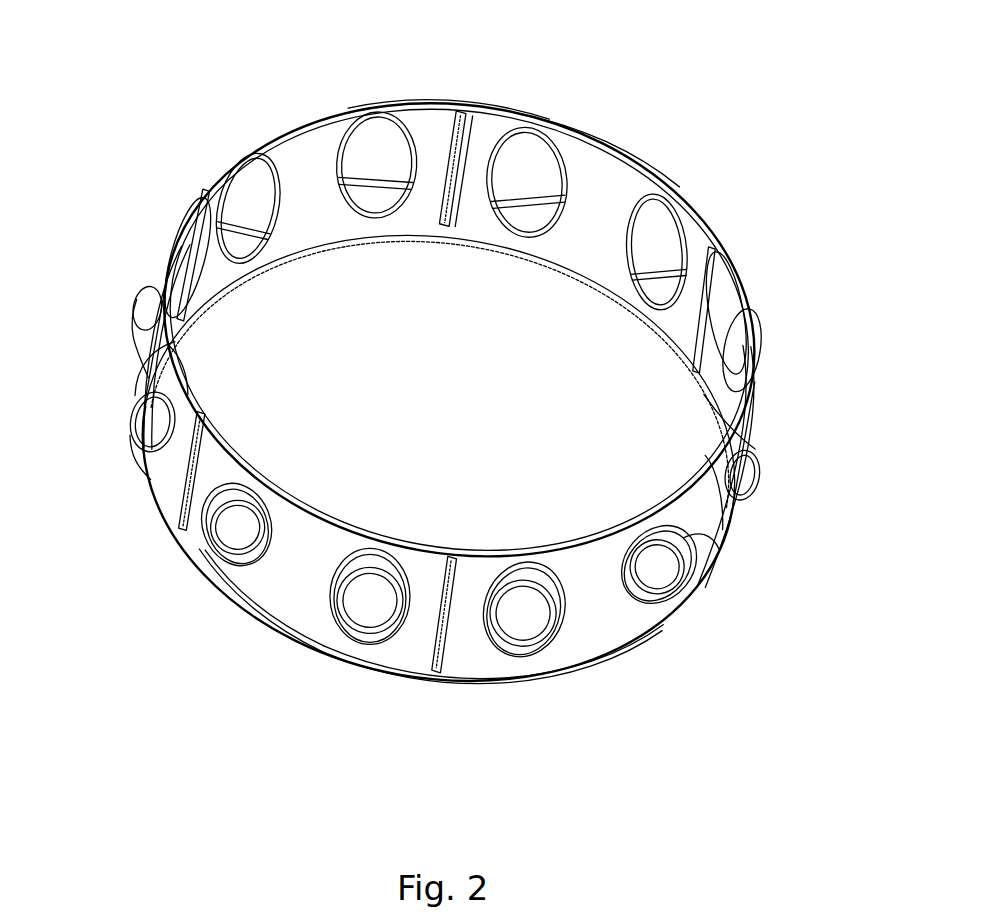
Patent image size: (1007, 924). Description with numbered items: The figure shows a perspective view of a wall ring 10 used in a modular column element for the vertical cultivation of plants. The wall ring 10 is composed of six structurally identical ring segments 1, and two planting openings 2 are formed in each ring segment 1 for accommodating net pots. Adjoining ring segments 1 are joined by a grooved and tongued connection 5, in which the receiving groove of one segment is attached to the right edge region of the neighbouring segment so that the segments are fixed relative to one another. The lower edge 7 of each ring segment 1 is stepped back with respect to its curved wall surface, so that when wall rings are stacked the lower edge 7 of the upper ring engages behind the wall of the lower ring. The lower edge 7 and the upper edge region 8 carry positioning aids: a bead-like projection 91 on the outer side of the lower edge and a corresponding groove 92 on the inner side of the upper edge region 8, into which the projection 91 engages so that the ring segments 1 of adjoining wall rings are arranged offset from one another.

The ring segment 1 is at (305, 150).
The planting opening 2 is at (236, 528).
The grooved and tongued connection 5 is at (196, 462).
The lower edge 7 is at (393, 667).
The upper edge region 8 is at (430, 106).
The wall ring 10 is at (738, 195).
The bead-like projection 91 is at (285, 632).
The groove 92 is at (605, 162).